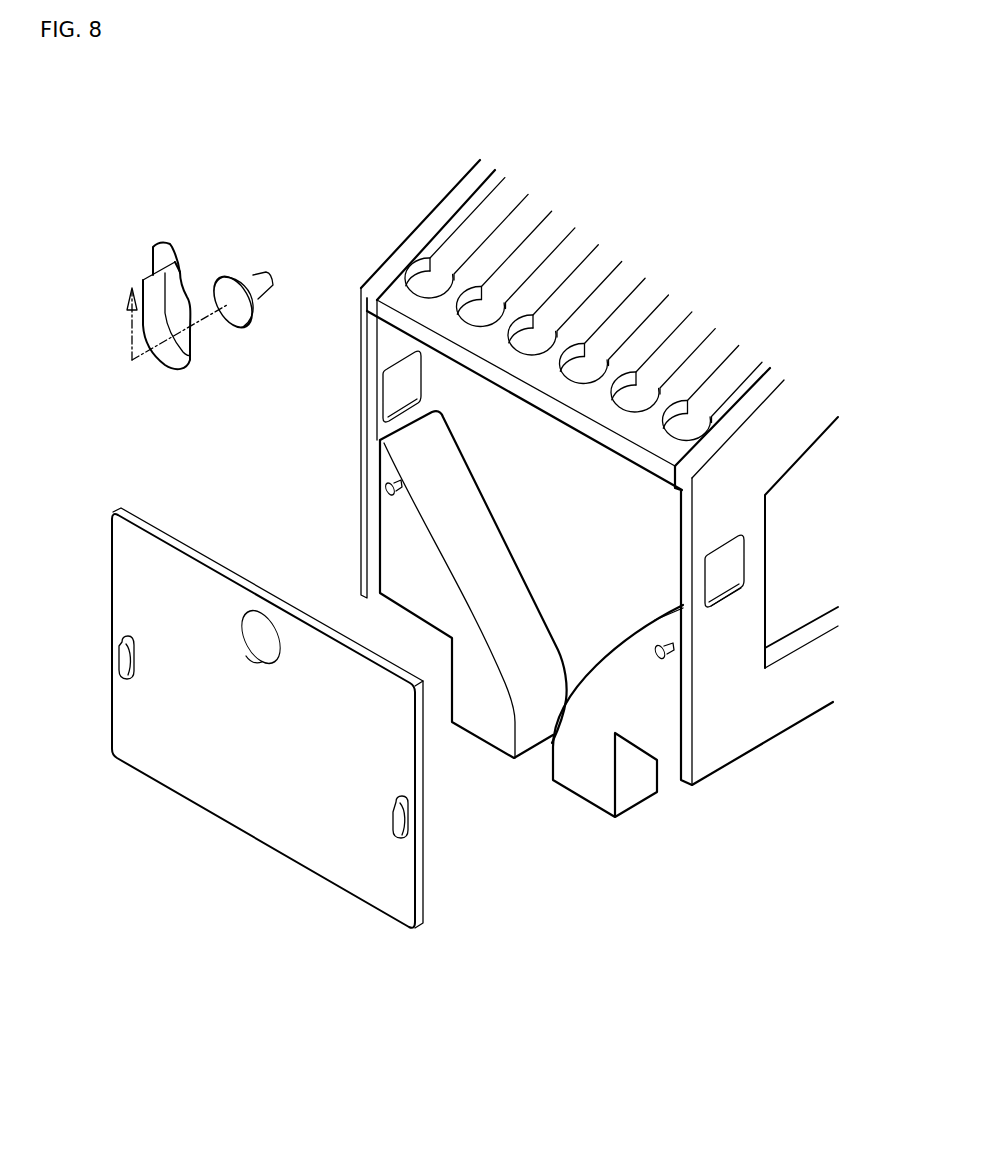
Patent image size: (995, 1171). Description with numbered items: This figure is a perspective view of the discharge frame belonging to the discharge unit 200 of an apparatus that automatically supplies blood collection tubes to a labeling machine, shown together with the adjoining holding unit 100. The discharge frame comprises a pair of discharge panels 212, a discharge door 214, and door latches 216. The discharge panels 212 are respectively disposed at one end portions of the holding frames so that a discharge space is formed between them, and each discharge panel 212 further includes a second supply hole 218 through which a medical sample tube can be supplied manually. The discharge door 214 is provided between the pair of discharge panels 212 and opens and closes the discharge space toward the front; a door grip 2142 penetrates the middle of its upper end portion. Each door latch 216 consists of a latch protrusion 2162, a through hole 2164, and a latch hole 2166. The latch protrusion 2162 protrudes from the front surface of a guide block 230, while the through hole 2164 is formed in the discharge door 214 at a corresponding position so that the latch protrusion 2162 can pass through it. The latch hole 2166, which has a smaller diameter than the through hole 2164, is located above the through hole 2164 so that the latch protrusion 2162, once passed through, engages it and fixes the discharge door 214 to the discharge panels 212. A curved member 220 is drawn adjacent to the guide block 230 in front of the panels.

The holding unit 100 is at (398, 183).
The discharge unit 200 is at (607, 640).
The discharge panels 212 is at (745, 748).
The discharge door 214 is at (267, 732).
The door grip 2142 is at (266, 628).
The door latch 216 is at (224, 293).
The latch protrusion 2162 is at (240, 320).
The through hole 2164 is at (163, 367).
The latch hole 2166 is at (153, 255).
The second supply hole 218 is at (733, 565).
The curved member 220 is at (540, 765).
The guide block 230 is at (587, 792).